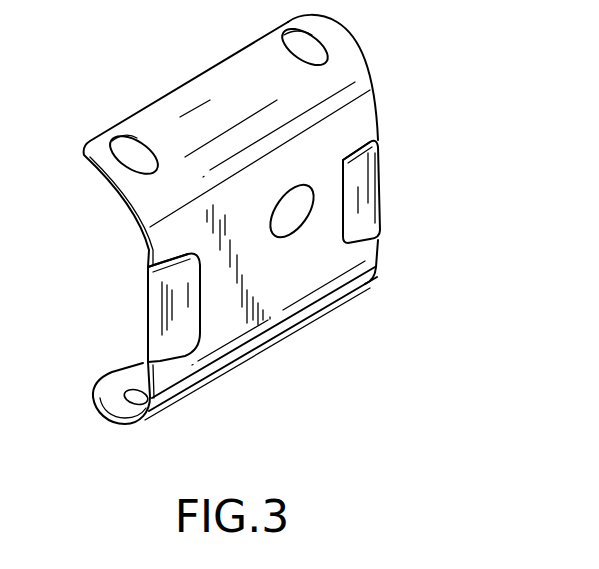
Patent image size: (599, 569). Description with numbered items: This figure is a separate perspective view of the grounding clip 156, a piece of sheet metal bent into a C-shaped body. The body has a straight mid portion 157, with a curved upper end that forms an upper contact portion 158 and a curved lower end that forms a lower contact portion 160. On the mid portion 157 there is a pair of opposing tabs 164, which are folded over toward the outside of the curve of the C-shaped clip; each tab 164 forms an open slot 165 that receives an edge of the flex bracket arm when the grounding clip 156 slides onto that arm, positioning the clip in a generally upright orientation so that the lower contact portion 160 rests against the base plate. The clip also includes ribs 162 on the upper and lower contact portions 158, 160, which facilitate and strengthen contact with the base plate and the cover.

The grounding clip 156 is at (460, 108).
The straight mid portion 157 is at (320, 267).
The upper contact portion 158 is at (212, 95).
The lower contact portion 160 is at (246, 352).
The ribs 162 is at (133, 147).
The tabs 164 is at (185, 320).
The open slot 165 is at (166, 262).